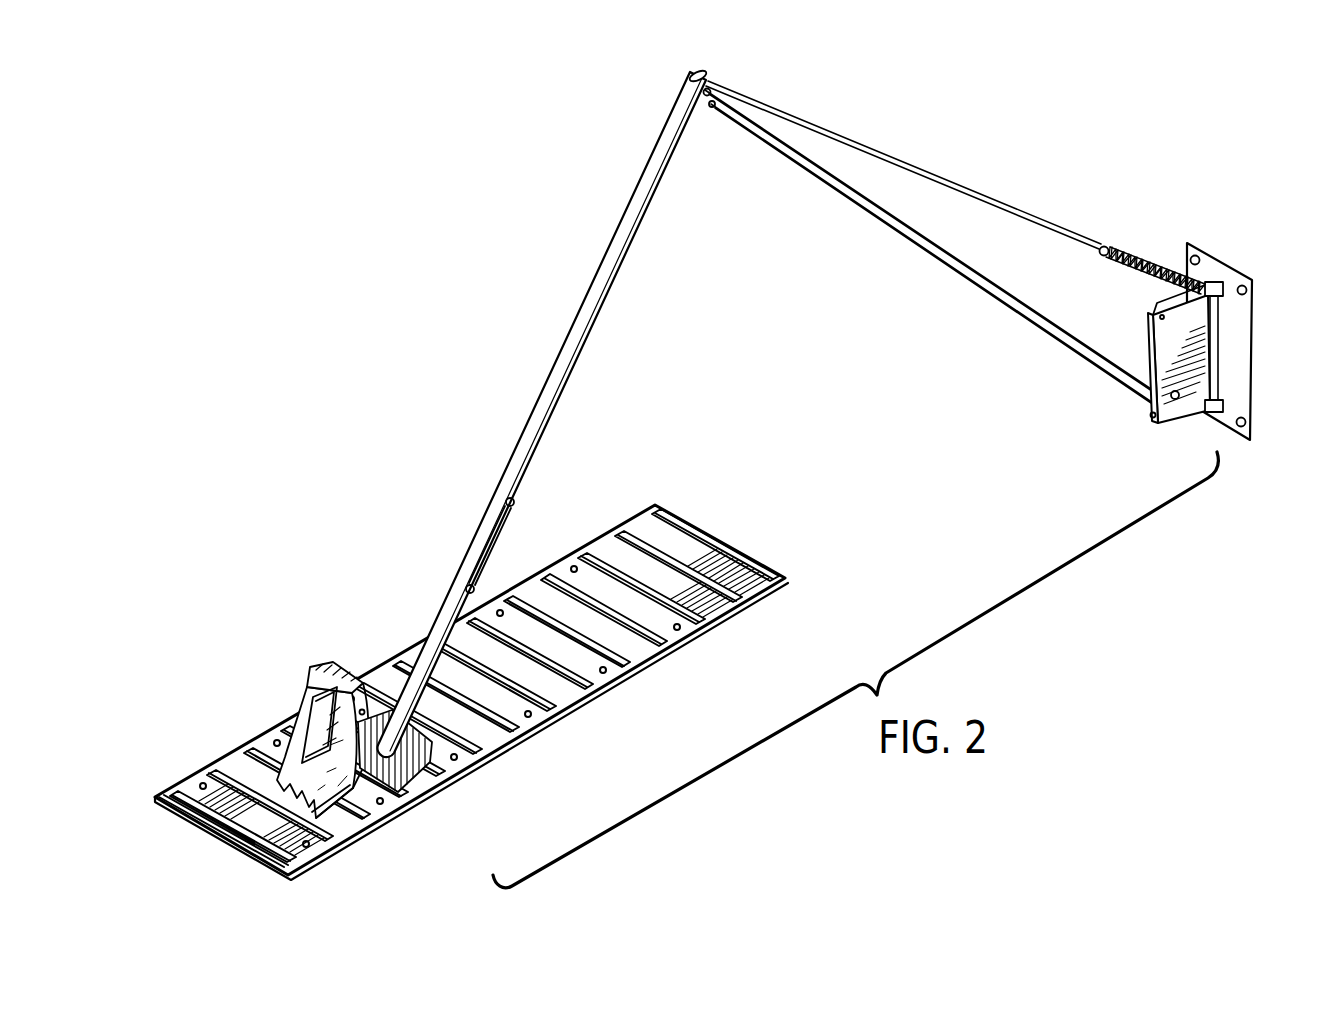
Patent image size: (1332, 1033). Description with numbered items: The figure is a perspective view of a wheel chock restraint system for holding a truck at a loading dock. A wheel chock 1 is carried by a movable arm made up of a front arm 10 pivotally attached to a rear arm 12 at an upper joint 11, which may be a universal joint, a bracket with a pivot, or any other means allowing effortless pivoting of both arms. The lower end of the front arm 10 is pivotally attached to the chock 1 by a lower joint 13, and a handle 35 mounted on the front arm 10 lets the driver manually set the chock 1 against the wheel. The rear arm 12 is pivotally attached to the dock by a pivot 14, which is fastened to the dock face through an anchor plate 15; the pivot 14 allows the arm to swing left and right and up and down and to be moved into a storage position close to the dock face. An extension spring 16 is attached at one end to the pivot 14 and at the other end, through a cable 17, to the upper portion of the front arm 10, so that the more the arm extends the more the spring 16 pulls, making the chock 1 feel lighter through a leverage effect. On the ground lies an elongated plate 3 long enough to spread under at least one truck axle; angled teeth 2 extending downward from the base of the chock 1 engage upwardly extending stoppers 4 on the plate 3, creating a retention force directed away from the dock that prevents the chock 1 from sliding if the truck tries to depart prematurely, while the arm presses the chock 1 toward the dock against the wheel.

The wheel chock 1 is at (332, 668).
The teeth 2 is at (362, 805).
The plate 3 is at (653, 505).
The stoppers 4 is at (478, 750).
The front arm 10 is at (598, 318).
The upper joint 11 is at (698, 100).
The rear arm 12 is at (883, 225).
The lower joint 13 is at (398, 760).
The pivot 14 is at (1152, 415).
The anchor plate 15 is at (1243, 333).
The extension spring 16 is at (1120, 247).
The cable 17 is at (914, 172).
The handle 35 is at (492, 548).